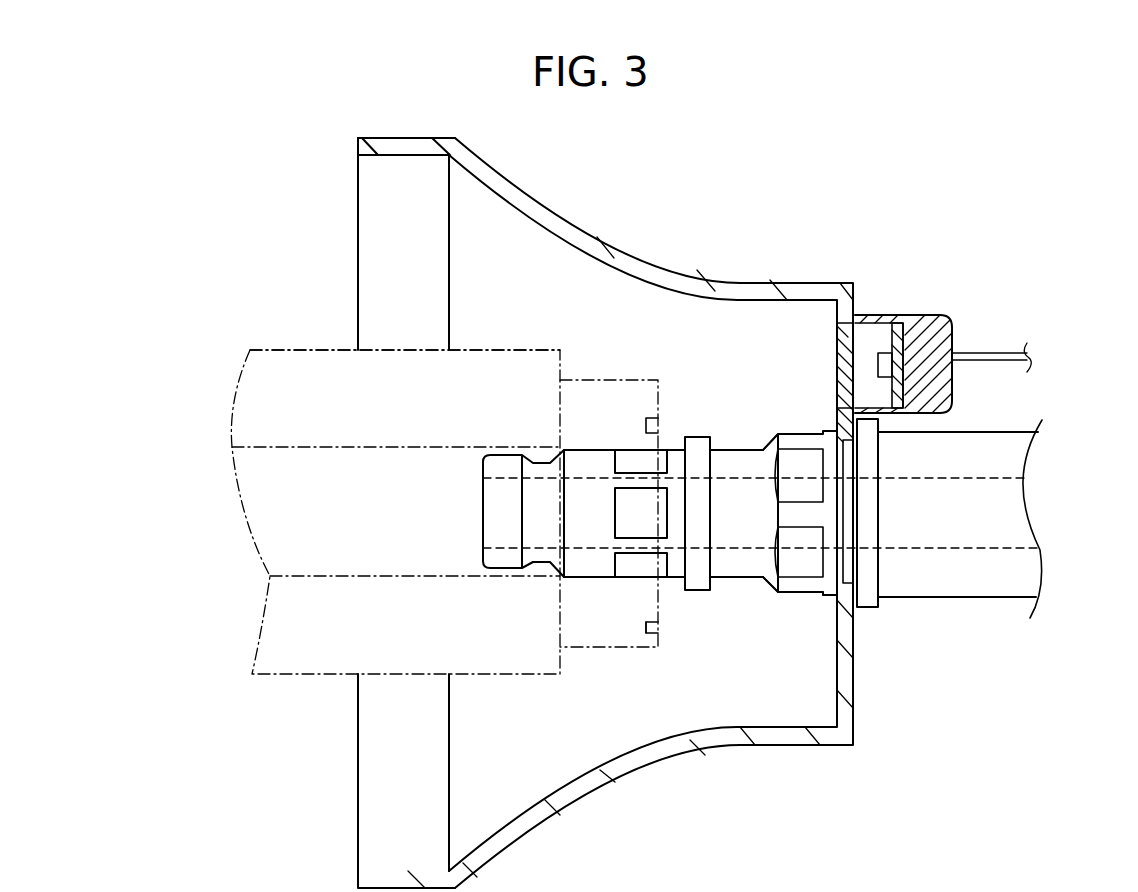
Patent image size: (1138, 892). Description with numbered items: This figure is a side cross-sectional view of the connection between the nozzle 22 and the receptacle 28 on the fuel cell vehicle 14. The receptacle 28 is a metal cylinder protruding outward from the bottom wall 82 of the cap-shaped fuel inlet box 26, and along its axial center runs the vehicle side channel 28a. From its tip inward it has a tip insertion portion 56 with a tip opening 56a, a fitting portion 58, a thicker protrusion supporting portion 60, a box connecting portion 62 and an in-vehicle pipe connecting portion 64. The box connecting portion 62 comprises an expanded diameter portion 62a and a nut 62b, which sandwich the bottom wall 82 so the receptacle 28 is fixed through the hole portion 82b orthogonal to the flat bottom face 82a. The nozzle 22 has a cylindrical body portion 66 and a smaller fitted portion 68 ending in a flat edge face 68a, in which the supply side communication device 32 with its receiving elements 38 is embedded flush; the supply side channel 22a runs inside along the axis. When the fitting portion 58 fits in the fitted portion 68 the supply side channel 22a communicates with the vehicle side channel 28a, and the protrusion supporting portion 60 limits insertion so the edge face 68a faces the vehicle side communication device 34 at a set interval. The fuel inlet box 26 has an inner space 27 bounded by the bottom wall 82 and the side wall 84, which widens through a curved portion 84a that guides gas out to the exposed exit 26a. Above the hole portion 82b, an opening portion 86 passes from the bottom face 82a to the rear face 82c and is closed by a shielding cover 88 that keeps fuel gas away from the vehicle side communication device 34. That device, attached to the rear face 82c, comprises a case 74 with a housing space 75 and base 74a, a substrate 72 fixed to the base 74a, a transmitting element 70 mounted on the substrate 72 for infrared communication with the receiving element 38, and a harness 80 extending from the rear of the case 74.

The vehicle 14 is at (352, 157).
The nozzle 22 is at (354, 480).
The supply side channel 22a is at (307, 574).
The fuel inlet box 26 is at (749, 214).
The exposed exit 26a is at (357, 755).
The inner space 27 is at (513, 783).
The receptacle 28 is at (800, 513).
The vehicle side channel 28a is at (955, 547).
The supply side communication device 32 is at (704, 638).
The vehicle side communication device 34 is at (901, 334).
The receiving element 38 is at (657, 628).
The tip insertion portion 56 is at (478, 538).
The tip opening 56a is at (483, 515).
The fitting portion 58 is at (598, 565).
The protrusion supporting portion 60 is at (733, 586).
The box connecting portion 62 is at (892, 573).
The expanded diameter portion 62a is at (807, 593).
The nut 62b is at (873, 608).
The in-vehicle pipe connecting portion 64 is at (957, 598).
The body portion 66 is at (322, 348).
The fitted portion 68 is at (666, 488).
The edge face 68a is at (660, 410).
The transmitting element 70 is at (878, 368).
The substrate 72 is at (893, 340).
The case 74 is at (886, 354).
The base 74a is at (896, 390).
The housing space 75 is at (902, 380).
The harness 80 is at (1001, 352).
The bottom wall 82 is at (851, 594).
The bottom face 82a is at (840, 700).
The hole portion 82b is at (857, 578).
The rear face 82c is at (855, 721).
The side wall 84 is at (400, 137).
The curved portion 84a is at (547, 210).
The opening portion 86 is at (843, 335).
The shielding cover 88 is at (845, 360).